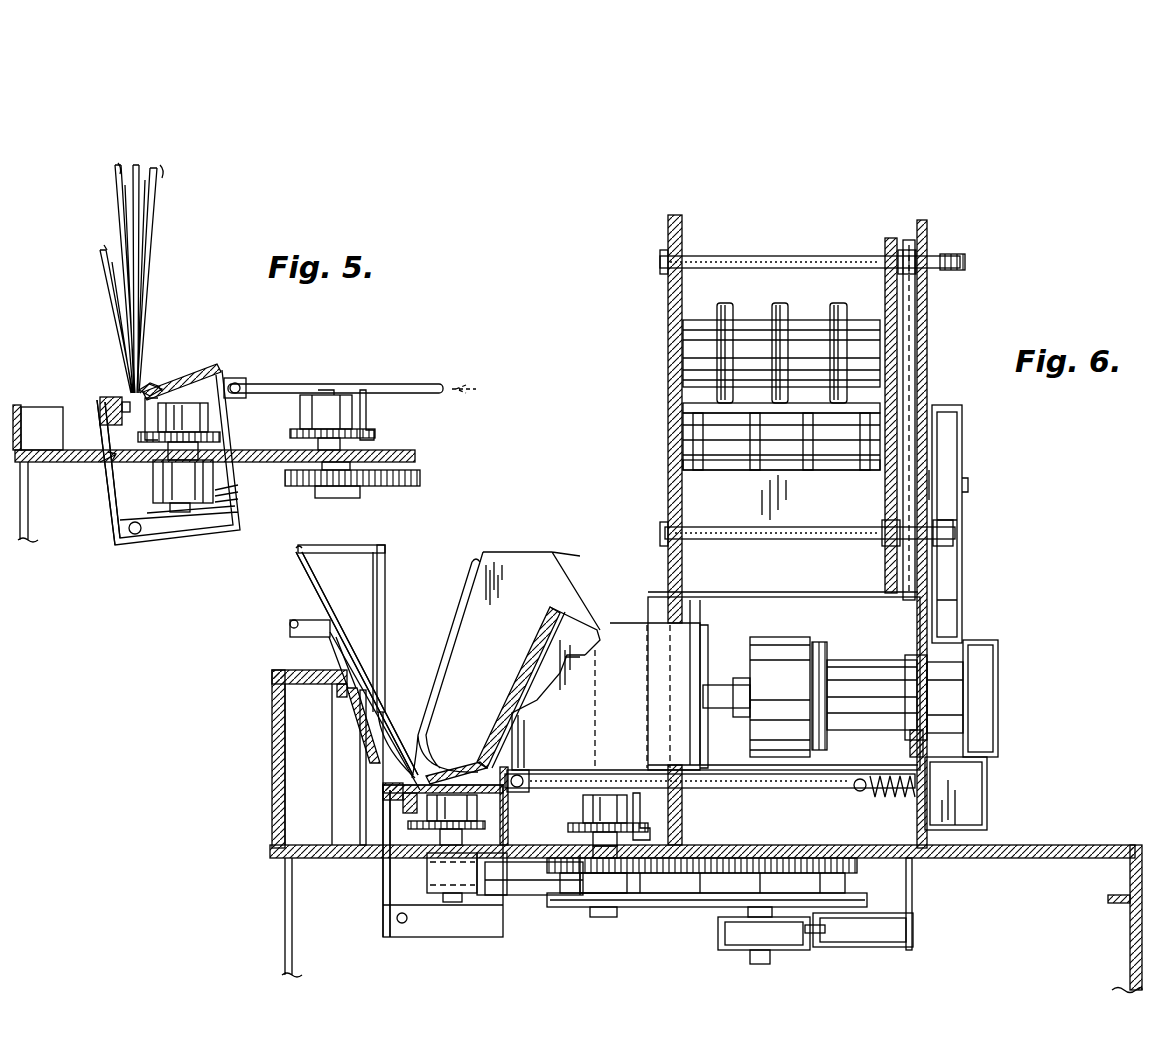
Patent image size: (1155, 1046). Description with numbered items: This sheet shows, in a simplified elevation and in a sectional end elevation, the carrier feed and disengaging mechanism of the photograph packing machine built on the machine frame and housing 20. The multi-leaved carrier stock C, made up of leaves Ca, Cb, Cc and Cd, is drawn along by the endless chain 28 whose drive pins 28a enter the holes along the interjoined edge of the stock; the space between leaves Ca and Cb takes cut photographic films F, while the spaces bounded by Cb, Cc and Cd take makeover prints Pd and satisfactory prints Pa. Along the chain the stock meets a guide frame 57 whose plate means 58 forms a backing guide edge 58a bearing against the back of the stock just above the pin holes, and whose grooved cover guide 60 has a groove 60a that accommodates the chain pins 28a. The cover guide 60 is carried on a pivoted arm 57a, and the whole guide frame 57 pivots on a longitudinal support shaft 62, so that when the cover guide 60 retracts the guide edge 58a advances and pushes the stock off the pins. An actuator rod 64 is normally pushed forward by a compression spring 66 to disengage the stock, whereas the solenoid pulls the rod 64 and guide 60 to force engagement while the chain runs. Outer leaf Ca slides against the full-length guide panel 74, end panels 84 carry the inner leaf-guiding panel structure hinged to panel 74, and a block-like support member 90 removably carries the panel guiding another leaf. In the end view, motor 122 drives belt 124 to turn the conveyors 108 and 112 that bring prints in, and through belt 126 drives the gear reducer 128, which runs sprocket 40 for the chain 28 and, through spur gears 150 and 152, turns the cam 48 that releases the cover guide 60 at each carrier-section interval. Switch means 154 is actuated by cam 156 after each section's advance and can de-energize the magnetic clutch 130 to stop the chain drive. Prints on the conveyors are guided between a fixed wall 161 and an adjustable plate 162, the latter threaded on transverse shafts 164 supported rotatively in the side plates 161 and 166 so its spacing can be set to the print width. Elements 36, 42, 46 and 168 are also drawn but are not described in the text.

In FIG. 5, the machine frame and housing 20 is at (411, 459).
In FIG. 6, the machine frame and housing 20 is at (1042, 846).
In FIG. 5, the endless chain 28 is at (100, 462).
In FIG. 6, the endless chain 28 is at (661, 822).
In FIG. 5, the drive pins 28a is at (395, 414).
In FIG. 5, the drive motor 36 is at (218, 428).
In FIG. 6, the drive motor 36 is at (488, 826).
In FIG. 5, the sprocket 40 is at (304, 433).
In FIG. 6, the sprocket 40 is at (586, 823).
In FIG. 6, the motor housing 42 is at (466, 893).
In FIG. 6, the lever arm 46 is at (531, 895).
In FIG. 6, the cam 48 is at (710, 898).
In FIG. 5, the guide frame 57 is at (209, 542).
In FIG. 6, the guide frame 57 is at (417, 945).
In FIG. 5, the pivoted arm 57a is at (102, 505).
In FIG. 6, the pivoted arm 57a is at (383, 896).
In FIG. 5, the plate means 58 is at (180, 378).
In FIG. 6, the plate means 58 is at (460, 794).
In FIG. 5, the backing guide edge 58a is at (165, 385).
In FIG. 6, the backing guide edge 58a is at (442, 775).
In FIG. 5, the grooved cover guide 60 is at (104, 396).
In FIG. 6, the grooved cover guide 60 is at (383, 792).
In FIG. 6, the groove 60a is at (403, 806).
In FIG. 6, the longitudinal support shaft 62 is at (397, 920).
In FIG. 5, the actuator rod 64 is at (368, 384).
In FIG. 6, the actuator rod 64 is at (790, 790).
In FIG. 6, the compression spring 66 is at (880, 800).
In FIG. 6, the guide panel 74 is at (358, 744).
In FIG. 6, the end panels 84 is at (354, 564).
In FIG. 6, the block-like support member 90 is at (518, 566).
In FIG. 6, the conveyor 108 is at (705, 475).
In FIG. 6, the conveyor 112 is at (782, 304).
In FIG. 6, the motor 122 is at (748, 638).
In FIG. 6, the belt 124 is at (960, 570).
In FIG. 6, the belt 126 is at (991, 642).
In FIG. 6, the gear reducer 128 is at (625, 623).
In FIG. 6, the magnetic clutch 130 is at (772, 645).
In FIG. 5, the spur gear 150 is at (372, 487).
In FIG. 6, the spur gear 150 is at (635, 900).
In FIG. 6, the spur gear 152 is at (912, 886).
In FIG. 6, the switch means 154 is at (880, 947).
In FIG. 6, the cam 156 is at (796, 950).
In FIG. 6, the fixed wall 161 is at (685, 300).
In FIG. 6, the plate 162 is at (891, 238).
In FIG. 6, the shafts 164 is at (806, 256).
In FIG. 6, the side plate 166 is at (926, 222).
In FIG. 6, the side housing 168 is at (985, 792).
In FIG. 5, the carrier stock C is at (150, 382).
In FIG. 5, the carrier leaf Ca is at (98, 262).
In FIG. 6, the carrier leaf Ca is at (350, 657).
In FIG. 5, the carrier leaf Cb is at (113, 180).
In FIG. 6, the carrier leaf Cb is at (385, 624).
In FIG. 5, the carrier leaf Cc is at (142, 172).
In FIG. 6, the carrier leaf Cc is at (434, 675).
In FIG. 5, the carrier leaf Cd is at (159, 192).
In FIG. 6, the carrier leaf Cd is at (520, 662).
In FIG. 5, the satisfactory prints Pa is at (117, 163).
In FIG. 5, the makeover prints Pd is at (162, 169).
In FIG. 5, the photographic films F is at (99, 246).